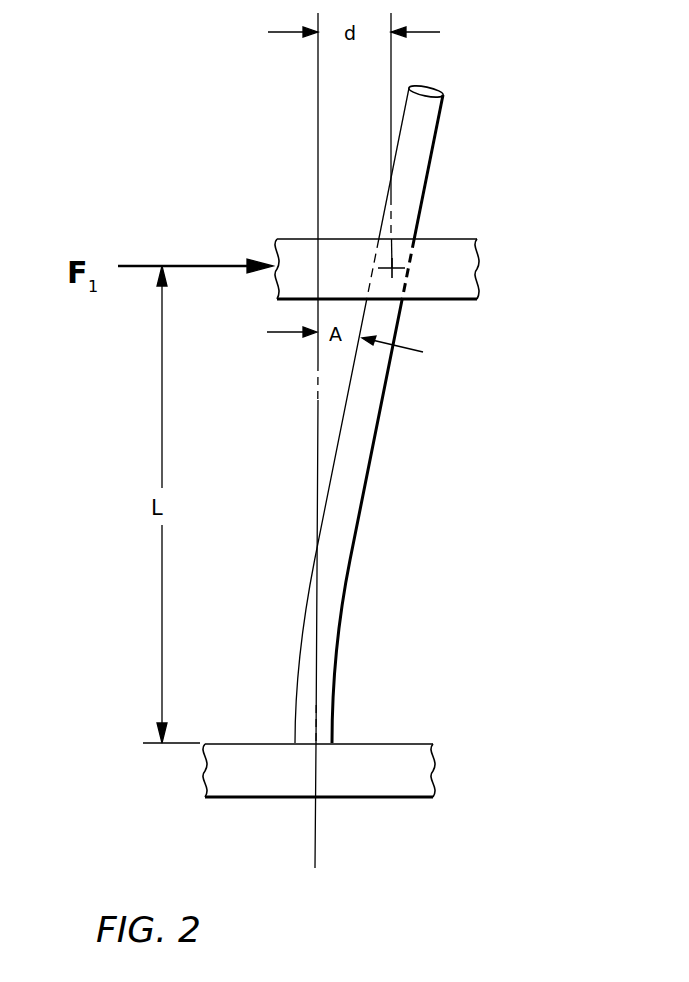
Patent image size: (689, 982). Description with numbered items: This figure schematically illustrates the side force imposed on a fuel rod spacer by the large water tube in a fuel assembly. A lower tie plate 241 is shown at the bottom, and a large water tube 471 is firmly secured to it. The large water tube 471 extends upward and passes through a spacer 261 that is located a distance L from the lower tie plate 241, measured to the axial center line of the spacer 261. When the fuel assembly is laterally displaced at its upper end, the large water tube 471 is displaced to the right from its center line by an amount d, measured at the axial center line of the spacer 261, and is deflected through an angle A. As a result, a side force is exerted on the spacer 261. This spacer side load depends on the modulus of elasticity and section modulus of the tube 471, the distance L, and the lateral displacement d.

The spacer 261 is at (478, 275).
The large water tube 471 is at (372, 462).
The lower tie plate 241 is at (433, 775).